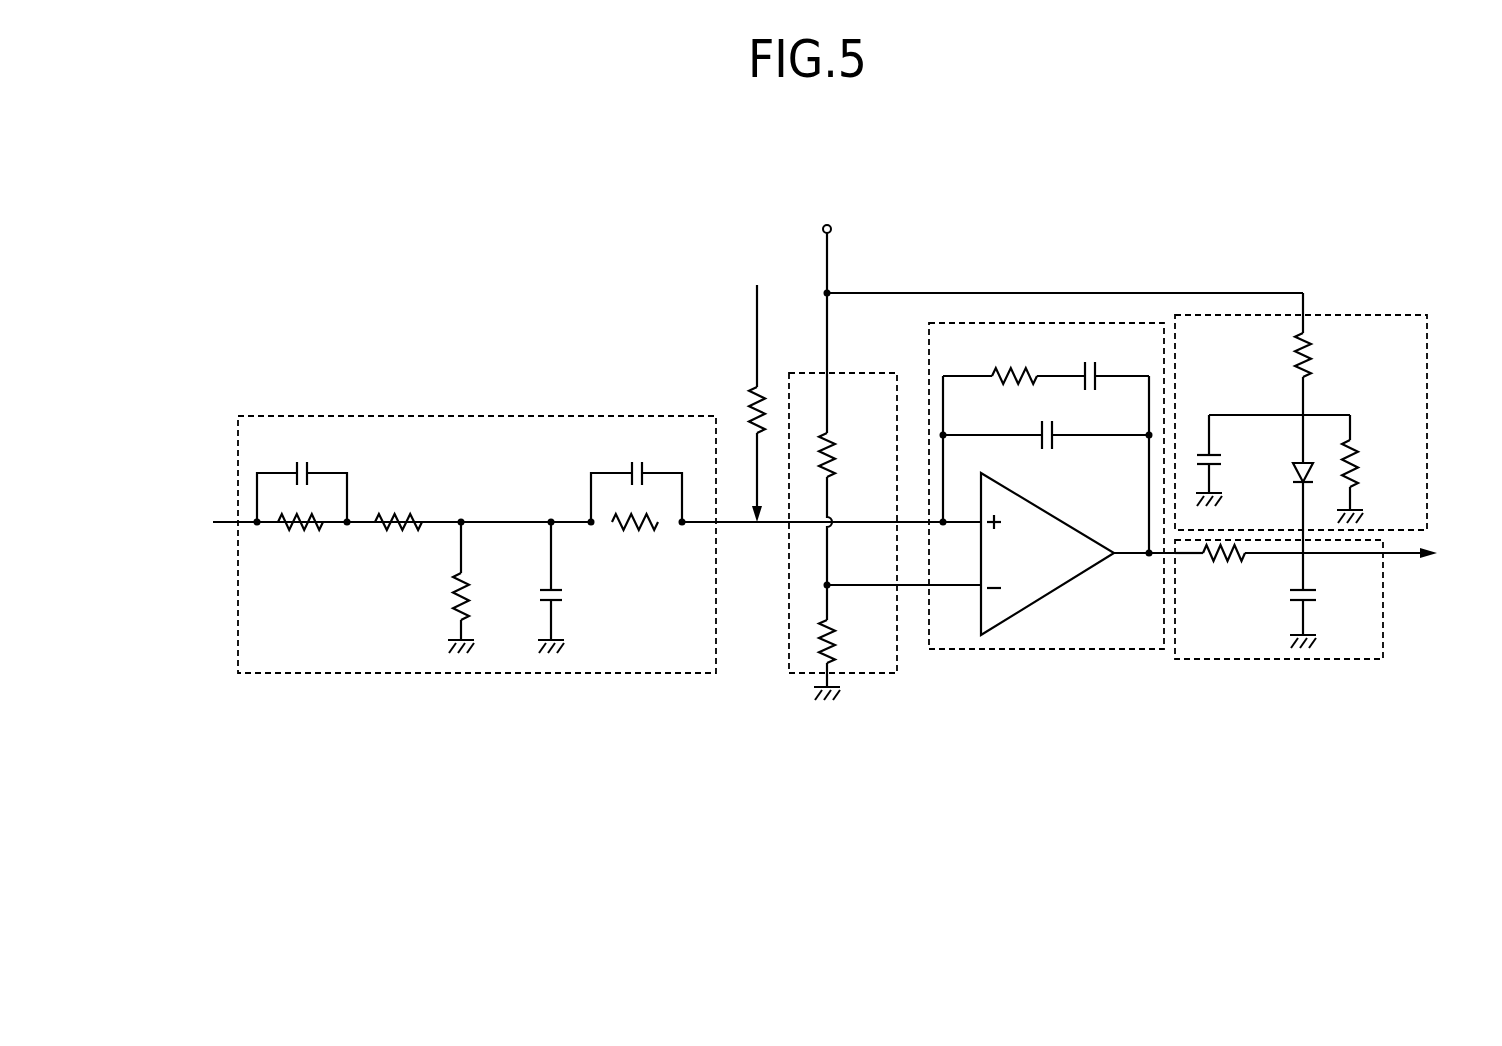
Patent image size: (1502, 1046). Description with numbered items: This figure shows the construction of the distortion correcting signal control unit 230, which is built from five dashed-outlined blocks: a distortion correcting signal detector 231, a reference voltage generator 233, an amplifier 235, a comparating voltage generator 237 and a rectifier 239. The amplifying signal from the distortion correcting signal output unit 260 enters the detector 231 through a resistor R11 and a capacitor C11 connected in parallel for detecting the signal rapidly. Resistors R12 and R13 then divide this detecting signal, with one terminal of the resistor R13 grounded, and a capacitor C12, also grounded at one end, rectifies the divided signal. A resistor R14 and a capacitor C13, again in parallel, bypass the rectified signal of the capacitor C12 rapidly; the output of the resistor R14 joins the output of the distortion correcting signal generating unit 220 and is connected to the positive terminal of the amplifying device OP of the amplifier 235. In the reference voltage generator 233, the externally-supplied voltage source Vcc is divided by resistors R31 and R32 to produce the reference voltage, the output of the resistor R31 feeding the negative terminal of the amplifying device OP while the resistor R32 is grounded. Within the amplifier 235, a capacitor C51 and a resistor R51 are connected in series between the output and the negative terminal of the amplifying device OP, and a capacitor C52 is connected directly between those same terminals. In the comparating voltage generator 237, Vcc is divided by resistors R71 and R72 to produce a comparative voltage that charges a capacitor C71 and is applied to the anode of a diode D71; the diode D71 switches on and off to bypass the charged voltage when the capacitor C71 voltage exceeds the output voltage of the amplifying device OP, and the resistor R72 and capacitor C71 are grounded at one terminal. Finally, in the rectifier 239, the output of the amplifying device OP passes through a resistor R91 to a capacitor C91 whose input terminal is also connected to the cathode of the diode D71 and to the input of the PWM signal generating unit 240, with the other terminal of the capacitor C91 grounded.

The distortion correcting signal control unit 230 is at (1236, 257).
The distortion correcting signal output unit 260 is at (205, 522).
The distortion correcting signal generating unit 220 is at (759, 388).
The distortion correcting signal detector 231 is at (612, 673).
The reference voltage generator 233 is at (867, 673).
The amplifier 235 is at (1063, 650).
The comparating voltage generator 237 is at (1392, 314).
The rectifier 239 is at (1258, 659).
The PWM signal generating unit 240 is at (1440, 558).
The resistor R11 is at (299, 540).
The resistor R12 is at (399, 540).
The resistor R13 is at (486, 587).
The resistor R14 is at (640, 540).
The capacitor C11 is at (302, 477).
The capacitor C12 is at (576, 587).
The capacitor C13 is at (636, 477).
The resistor R31 is at (854, 455).
The resistor R32 is at (852, 660).
The resistor R51 is at (990, 359).
The capacitor C51 is at (1093, 362).
The capacitor C52 is at (1046, 422).
The amplifying device OP is at (1047, 554).
The resistor R71 is at (1328, 355).
The resistor R72 is at (1374, 469).
The capacitor C71 is at (1234, 460).
The diode D71 is at (1280, 508).
The resistor R91 is at (1213, 571).
The capacitor C91 is at (1327, 600).